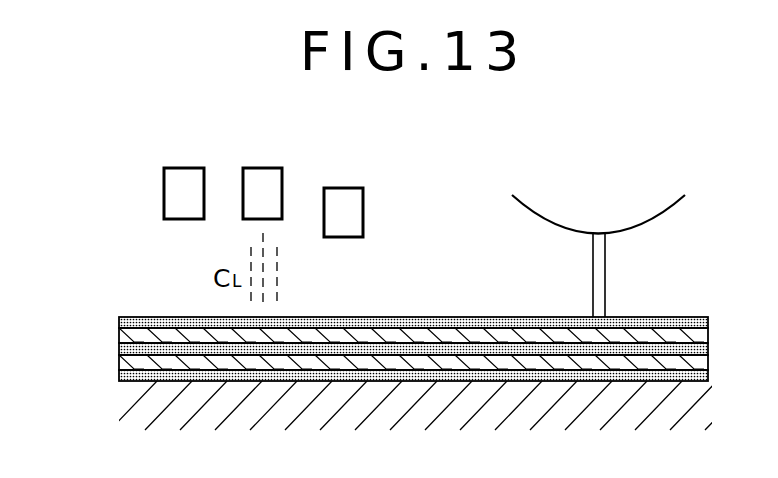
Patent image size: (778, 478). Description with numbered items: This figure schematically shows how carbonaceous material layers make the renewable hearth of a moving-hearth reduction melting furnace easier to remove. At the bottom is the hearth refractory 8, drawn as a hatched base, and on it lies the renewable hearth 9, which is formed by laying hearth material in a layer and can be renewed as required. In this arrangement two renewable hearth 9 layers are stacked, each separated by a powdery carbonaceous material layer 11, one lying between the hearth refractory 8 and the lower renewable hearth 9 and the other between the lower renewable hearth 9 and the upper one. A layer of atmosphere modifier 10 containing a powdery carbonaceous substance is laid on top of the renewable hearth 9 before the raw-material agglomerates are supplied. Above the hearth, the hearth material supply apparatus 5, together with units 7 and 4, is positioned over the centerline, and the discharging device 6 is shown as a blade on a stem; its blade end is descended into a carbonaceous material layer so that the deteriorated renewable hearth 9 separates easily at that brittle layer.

The processing unit 4 is at (347, 188).
The hearth material supply apparatus 5 is at (188, 168).
The discharging device 6 is at (587, 203).
The processing head 7 is at (266, 168).
The hearth refractory 8 is at (145, 422).
The renewable hearth 9 is at (128, 337).
The atmosphere modifier 10 is at (119, 318).
The intermediate layer 11 is at (118, 350).